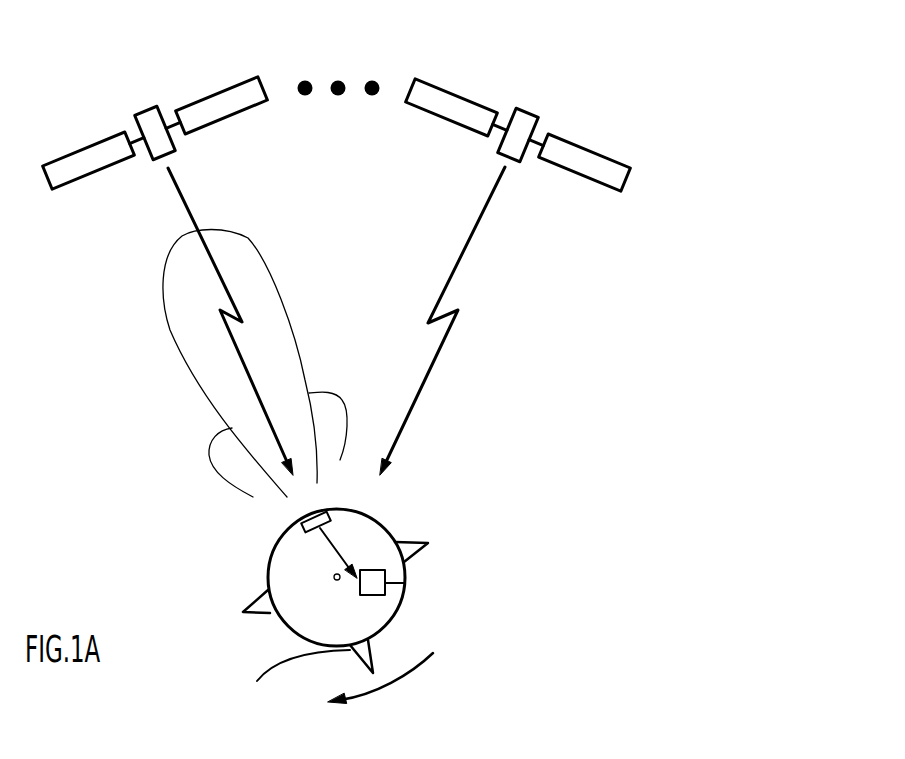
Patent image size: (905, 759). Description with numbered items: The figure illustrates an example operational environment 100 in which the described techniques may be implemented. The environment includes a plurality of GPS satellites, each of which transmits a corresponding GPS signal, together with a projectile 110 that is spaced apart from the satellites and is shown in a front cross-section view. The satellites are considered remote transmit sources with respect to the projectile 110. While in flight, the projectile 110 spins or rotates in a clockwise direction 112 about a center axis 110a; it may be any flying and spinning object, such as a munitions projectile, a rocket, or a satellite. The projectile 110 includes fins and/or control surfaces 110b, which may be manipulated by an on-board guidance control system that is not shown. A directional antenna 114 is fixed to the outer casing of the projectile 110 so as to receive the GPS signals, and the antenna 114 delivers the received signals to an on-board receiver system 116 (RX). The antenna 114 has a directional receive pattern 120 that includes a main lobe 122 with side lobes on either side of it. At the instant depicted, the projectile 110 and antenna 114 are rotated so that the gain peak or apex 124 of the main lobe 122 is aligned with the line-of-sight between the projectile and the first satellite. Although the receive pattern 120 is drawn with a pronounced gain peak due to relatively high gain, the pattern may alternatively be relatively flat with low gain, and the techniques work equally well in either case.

The operational environment 100 is at (542, 24).
The projectile 110 is at (368, 600).
The center axis 110a is at (333, 577).
The fins and/or control surfaces 110b is at (411, 540).
The clockwise direction 112 is at (405, 680).
The directional antenna 114 is at (285, 536).
The receiver system 116 is at (405, 583).
The directional receive pattern 120 is at (192, 340).
The main lobe 122 is at (168, 312).
The gain peak 124 is at (212, 228).